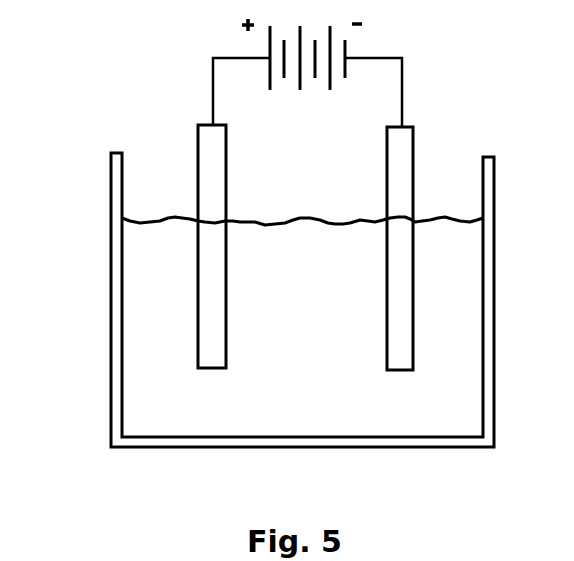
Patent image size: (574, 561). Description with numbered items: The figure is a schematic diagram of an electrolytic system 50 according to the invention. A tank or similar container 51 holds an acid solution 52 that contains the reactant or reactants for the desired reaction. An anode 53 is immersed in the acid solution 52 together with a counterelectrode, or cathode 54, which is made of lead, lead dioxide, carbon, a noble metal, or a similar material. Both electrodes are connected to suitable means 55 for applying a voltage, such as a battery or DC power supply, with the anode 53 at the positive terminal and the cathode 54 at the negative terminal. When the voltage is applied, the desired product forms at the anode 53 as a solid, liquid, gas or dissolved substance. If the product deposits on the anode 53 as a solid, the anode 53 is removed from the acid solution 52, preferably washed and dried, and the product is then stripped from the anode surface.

The electrolytic system 50 is at (98, 85).
The container 51 is at (488, 378).
The acid solution 52 is at (152, 363).
The anode 53 is at (212, 299).
The counterelectrode (cathode) 54 is at (397, 302).
The voltage-applying means 55 is at (315, 90).